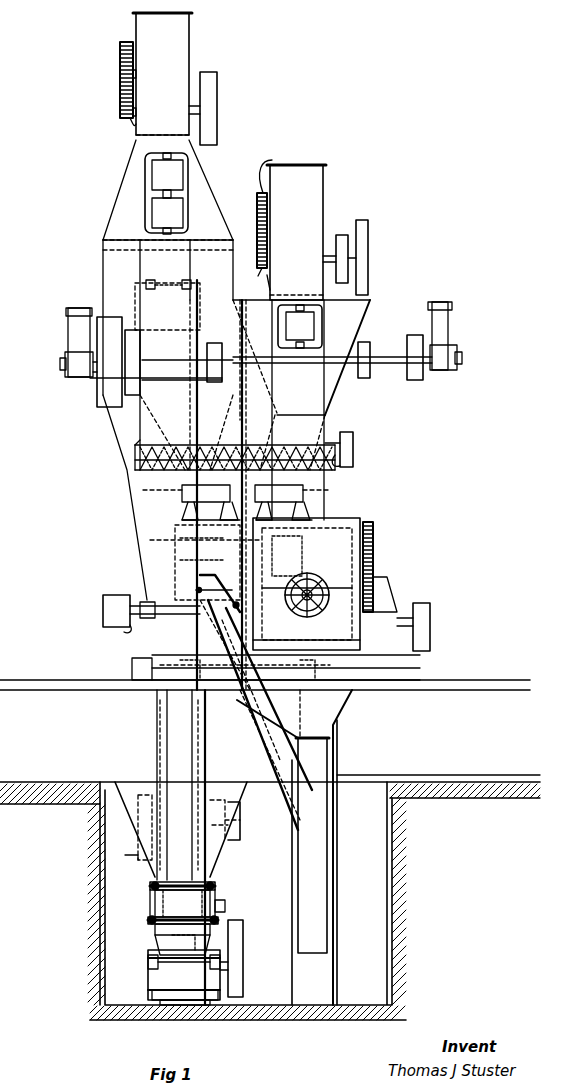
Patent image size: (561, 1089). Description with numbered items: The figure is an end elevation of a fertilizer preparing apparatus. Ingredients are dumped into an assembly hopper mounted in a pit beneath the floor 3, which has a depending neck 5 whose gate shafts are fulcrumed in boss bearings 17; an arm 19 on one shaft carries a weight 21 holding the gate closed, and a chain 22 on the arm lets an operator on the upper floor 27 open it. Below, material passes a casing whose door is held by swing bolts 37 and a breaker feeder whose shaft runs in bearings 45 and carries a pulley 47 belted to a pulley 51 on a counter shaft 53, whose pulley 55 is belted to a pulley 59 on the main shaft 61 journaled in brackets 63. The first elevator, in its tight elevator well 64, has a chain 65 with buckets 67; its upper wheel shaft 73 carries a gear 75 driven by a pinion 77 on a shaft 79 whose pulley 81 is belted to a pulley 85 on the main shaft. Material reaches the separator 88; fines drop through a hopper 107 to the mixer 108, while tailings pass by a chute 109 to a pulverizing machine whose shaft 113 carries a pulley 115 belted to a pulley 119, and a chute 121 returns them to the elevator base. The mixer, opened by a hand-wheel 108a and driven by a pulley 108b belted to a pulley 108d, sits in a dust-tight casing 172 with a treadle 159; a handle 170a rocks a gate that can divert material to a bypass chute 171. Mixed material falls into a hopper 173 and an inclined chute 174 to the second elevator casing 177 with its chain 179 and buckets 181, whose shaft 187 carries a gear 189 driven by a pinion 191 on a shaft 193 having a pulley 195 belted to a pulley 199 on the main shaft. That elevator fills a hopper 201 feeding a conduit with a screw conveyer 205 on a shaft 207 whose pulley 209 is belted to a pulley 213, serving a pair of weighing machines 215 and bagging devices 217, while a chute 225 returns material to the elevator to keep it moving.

The elevator well 64 is at (180, 38).
The gear 75 is at (120, 58).
The shaft 73 is at (126, 80).
The pinion 77 is at (128, 112).
The shaft 79 is at (133, 127).
The pulley 81 is at (215, 88).
The buckets 67 is at (150, 205).
The chain 65 is at (105, 238).
The separator 88 is at (103, 282).
The shaft 187 is at (257, 200).
The gear 189 is at (262, 165).
The pinion 191 is at (250, 277).
The shaft 193 is at (264, 289).
The casing 177 is at (313, 189).
The pulley 213 is at (345, 238).
The pulley 195 is at (368, 236).
The hopper 201 is at (338, 385).
The chain 179 is at (278, 318).
The buckets 181 is at (322, 320).
The pulley 199 is at (368, 342).
The pulley 108d is at (420, 378).
The brackets 63 is at (68, 326).
The main shaft 61 is at (65, 366).
The pulley 119 is at (97, 396).
The pulley 59 is at (135, 393).
The pulley 85 is at (222, 385).
The hopper 107 is at (226, 428).
The chute 109 is at (135, 460).
The screw conveyer 205 is at (135, 445).
The pulley 209 is at (353, 440).
The shaft 207 is at (353, 461).
The weighing machines 215 is at (182, 492).
The bagging devices 217 is at (180, 520).
The chute 225 is at (190, 540).
The dust-tight casing 172 is at (362, 540).
The mixer 108 is at (373, 560).
The hand-wheel 108a is at (297, 610).
The handle 170a is at (236, 590).
The pulley 115 is at (107, 597).
The shaft 113 is at (126, 630).
The pulley 108b is at (430, 612).
The treadle 159 is at (132, 665).
The floor 27 is at (130, 690).
The bypass chute 171 is at (265, 758).
The hopper 173 is at (345, 706).
The inclined chute 174 is at (320, 762).
The floor 3 is at (84, 782).
The chute 121 is at (160, 762).
The pulley 55 is at (140, 858).
The pulley 51 is at (240, 838).
The counter shaft 53 is at (224, 848).
The chain 22 is at (218, 885).
The boss bearings 17 is at (150, 896).
The neck 5 is at (155, 906).
The arm 19 is at (225, 906).
The weight 21 is at (222, 921).
The bearings 45 is at (150, 970).
The pulley 47 is at (243, 986).
The swing bolts 37 is at (152, 996).